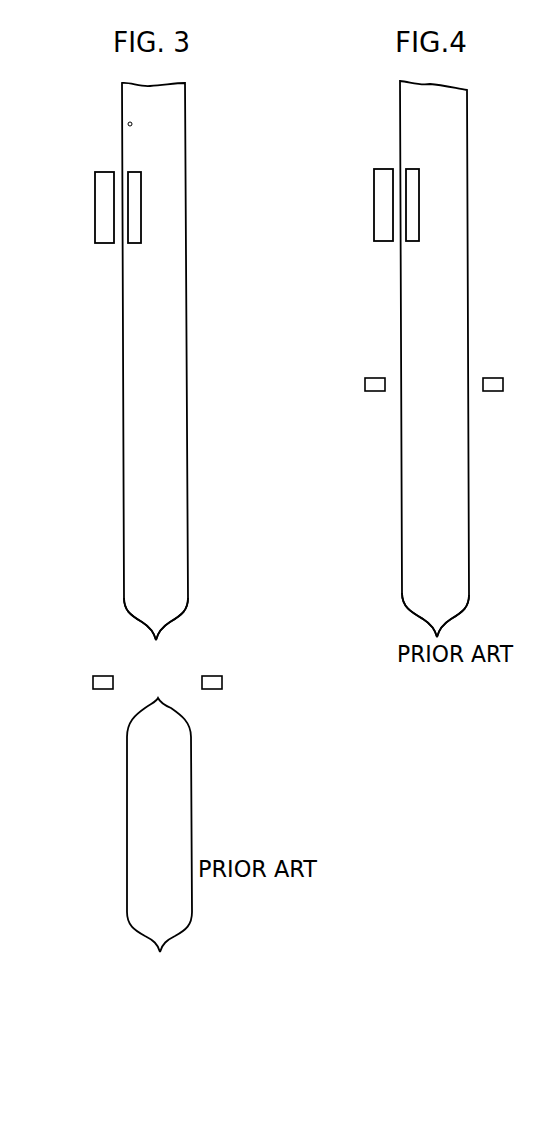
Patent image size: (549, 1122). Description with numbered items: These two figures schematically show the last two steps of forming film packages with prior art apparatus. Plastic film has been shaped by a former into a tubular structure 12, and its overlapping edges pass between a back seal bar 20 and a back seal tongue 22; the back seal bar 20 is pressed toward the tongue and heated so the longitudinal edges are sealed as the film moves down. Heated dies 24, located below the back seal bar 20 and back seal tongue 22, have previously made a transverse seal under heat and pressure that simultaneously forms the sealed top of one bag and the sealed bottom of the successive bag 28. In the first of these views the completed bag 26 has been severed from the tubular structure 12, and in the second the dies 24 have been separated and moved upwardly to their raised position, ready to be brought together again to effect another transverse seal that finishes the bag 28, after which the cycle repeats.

In FIG. 3, the tubular structure 12 is at (188, 462).
In FIG. 4, the tubular structure 12 is at (469, 450).
In FIG. 3, the back seal bar 20 is at (100, 203).
In FIG. 4, the back seal bar 20 is at (380, 203).
In FIG. 3, the back seal tongue 22 is at (135, 203).
In FIG. 4, the back seal tongue 22 is at (413, 201).
In FIG. 3, the heated dies 24 is at (93, 682).
In FIG. 4, the heated dies 24 is at (365, 382).
In FIG. 3, the completed bag 26 is at (192, 768).
In FIG. 3, the successive bag 28 is at (188, 563).
In FIG. 4, the successive bag 28 is at (469, 565).